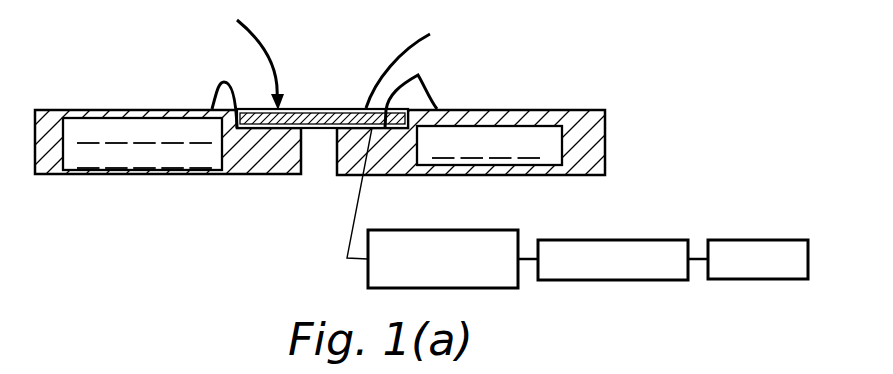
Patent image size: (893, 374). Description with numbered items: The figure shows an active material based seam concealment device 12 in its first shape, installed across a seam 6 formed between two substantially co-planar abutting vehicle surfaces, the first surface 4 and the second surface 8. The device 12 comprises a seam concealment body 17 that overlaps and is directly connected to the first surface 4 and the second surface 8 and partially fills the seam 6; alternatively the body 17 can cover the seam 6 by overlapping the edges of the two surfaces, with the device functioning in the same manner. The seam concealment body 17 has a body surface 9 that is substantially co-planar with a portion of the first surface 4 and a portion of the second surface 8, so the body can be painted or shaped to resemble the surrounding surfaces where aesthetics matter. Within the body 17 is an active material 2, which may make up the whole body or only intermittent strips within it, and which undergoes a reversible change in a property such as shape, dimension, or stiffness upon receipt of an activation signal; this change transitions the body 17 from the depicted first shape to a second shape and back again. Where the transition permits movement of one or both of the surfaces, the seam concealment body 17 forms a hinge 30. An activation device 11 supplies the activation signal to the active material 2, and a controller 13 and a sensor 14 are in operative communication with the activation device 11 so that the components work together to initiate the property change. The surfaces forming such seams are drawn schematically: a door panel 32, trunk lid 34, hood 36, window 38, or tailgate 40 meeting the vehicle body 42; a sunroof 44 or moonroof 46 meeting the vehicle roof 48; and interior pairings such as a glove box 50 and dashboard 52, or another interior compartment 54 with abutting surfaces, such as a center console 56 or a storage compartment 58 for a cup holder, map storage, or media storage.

The active material 2 is at (329, 108).
The first surface 4 is at (220, 102).
The seam 6 is at (312, 187).
The second surface 8 is at (411, 94).
The body surface 9 is at (397, 136).
The activation device 11 is at (447, 230).
The active material based seam concealment device 12 is at (255, 78).
The controller 13 is at (598, 240).
The sensor 14 is at (748, 240).
The seam concealment body 17 is at (249, 55).
The hinge 30 is at (322, 69).
The door panel 32 is at (88, 131).
The trunk lid 34 is at (116, 131).
The hood 36 is at (144, 131).
The window 38 is at (172, 131).
The tailgate 40 is at (200, 131).
The vehicle body 42 is at (443, 146).
The sunroof 44 is at (88, 156).
The moonroof 46 is at (116, 156).
The vehicle roof 48 is at (472, 146).
The glove box 50 is at (144, 156).
The dashboard 52 is at (500, 146).
The interior compartment 54 is at (529, 146).
The center console 56 is at (172, 156).
The storage compartment 58 is at (200, 156).